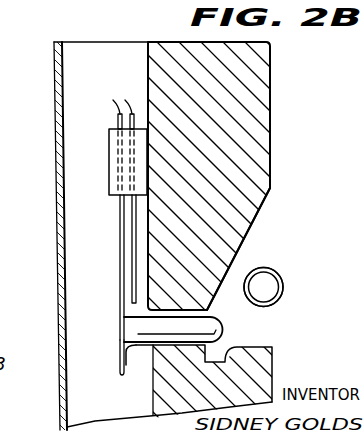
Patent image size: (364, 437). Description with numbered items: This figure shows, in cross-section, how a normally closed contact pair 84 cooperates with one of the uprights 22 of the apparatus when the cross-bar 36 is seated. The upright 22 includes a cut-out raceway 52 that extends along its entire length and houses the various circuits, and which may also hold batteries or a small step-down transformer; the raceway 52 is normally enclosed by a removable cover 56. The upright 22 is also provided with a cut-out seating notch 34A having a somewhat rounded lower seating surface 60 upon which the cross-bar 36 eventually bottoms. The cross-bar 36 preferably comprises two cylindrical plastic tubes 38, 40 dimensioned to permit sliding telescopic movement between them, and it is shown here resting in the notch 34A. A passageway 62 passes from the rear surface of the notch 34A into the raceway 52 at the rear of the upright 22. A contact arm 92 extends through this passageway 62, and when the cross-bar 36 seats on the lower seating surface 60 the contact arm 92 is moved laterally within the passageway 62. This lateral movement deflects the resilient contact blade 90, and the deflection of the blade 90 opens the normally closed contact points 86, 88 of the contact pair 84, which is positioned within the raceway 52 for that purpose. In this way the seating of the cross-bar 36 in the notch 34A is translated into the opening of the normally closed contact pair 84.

The upright 22 is at (274, 122).
The seating notch 34A is at (270, 231).
The cross-bar 36 is at (277, 260).
The cylindrical plastic tube 38 is at (281, 277).
The cylindrical plastic tube 40 is at (283, 293).
The cut-out raceway 52 is at (107, 81).
The removable cover 56 is at (53, 92).
The seating surface 60 is at (273, 357).
The passageway 62 is at (213, 314).
The normally closed contact pair 84 is at (102, 156).
The normally closed contact point 86 is at (124, 288).
The normally closed contact point 88 is at (130, 284).
The resilient contact blade 90 is at (119, 359).
The contact arm 92 is at (126, 365).